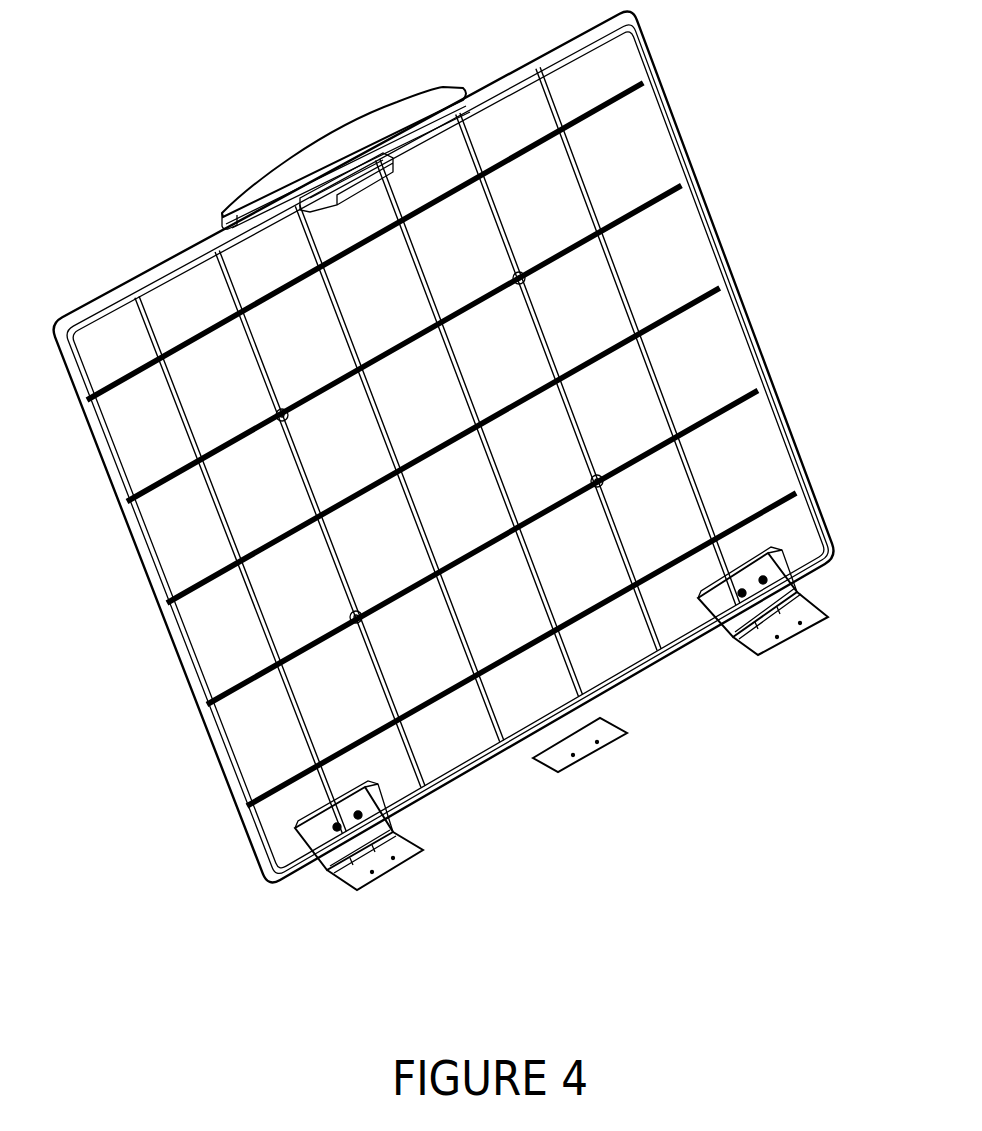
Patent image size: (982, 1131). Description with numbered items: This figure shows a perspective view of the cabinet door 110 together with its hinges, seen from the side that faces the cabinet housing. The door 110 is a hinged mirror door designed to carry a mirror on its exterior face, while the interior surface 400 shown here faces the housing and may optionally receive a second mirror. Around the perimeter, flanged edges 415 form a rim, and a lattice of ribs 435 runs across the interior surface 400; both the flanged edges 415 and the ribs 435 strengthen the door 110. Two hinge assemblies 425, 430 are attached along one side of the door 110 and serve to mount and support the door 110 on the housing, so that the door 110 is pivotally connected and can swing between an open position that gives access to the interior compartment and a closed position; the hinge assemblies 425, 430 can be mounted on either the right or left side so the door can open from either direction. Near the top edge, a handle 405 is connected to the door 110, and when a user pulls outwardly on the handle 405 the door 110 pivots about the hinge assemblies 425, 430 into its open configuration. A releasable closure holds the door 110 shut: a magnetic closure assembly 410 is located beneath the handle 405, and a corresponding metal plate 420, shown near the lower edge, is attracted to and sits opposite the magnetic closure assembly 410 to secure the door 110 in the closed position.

The door 110 is at (444, 448).
The interior surface 400 is at (431, 476).
The handle 405 is at (321, 150).
The magnetic closure assembly 410 is at (470, 96).
The flanged edges 415 is at (675, 132).
The metal plate 420 is at (568, 768).
The hinge assembly 425 is at (767, 653).
The hinge assembly 430 is at (345, 873).
The ribs 435 is at (407, 747).